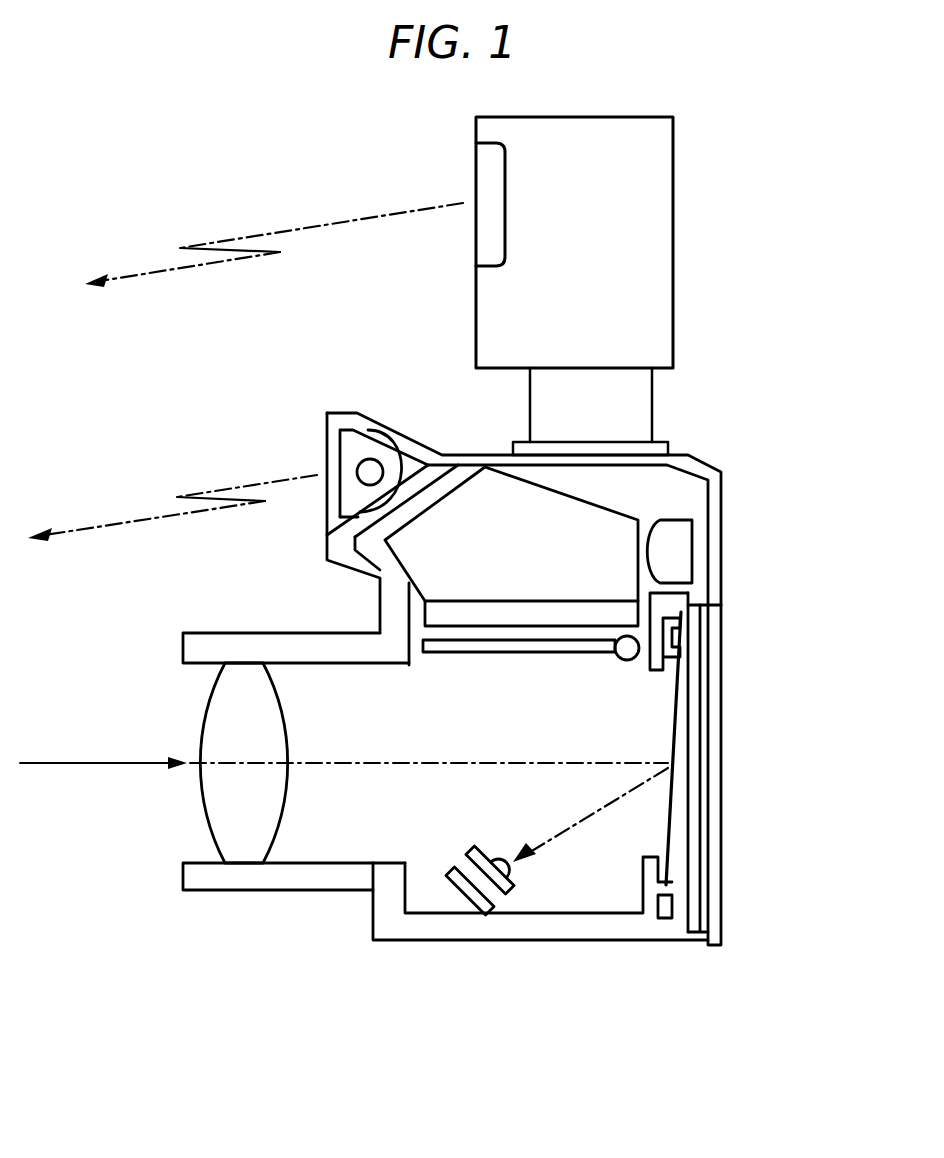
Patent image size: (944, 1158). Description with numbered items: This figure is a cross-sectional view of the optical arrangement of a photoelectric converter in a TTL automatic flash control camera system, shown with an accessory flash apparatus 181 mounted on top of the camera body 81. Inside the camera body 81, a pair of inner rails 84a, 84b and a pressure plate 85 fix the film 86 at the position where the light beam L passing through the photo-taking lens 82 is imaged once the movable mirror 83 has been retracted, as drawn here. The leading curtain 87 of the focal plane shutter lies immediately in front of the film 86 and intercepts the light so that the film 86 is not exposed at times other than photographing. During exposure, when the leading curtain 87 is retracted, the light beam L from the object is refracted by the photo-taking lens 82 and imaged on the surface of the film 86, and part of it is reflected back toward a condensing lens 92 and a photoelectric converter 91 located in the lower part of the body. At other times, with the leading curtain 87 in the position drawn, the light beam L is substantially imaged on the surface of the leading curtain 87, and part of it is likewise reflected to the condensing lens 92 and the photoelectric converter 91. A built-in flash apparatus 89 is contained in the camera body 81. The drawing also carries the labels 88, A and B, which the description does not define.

The flash apparatus (accessory flash apparatus) 181 is at (487, 255).
The camera body 81 is at (702, 463).
The photo-taking lens 82 is at (228, 710).
The movable mirror 83 is at (440, 645).
The inner rail 84a is at (673, 643).
The inner rail 84b is at (670, 897).
The pressure plate 85 is at (688, 753).
The film 86 is at (684, 790).
The leading curtain of focal plane shutter 87 is at (705, 803).
The outer plate 88 is at (712, 703).
The flash apparatus (built-in flash apparatus) 89 is at (356, 455).
The photoelectric converter 91 is at (463, 892).
The condensing lens 92 is at (508, 892).
The lens barrel unit A is at (266, 612).
The finder unit B is at (780, 562).
The light beam L is at (344, 790).